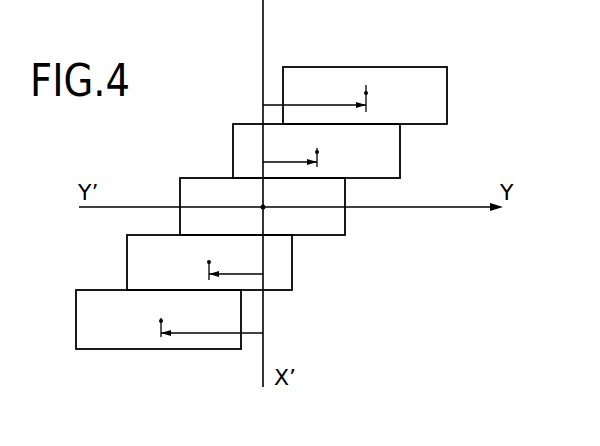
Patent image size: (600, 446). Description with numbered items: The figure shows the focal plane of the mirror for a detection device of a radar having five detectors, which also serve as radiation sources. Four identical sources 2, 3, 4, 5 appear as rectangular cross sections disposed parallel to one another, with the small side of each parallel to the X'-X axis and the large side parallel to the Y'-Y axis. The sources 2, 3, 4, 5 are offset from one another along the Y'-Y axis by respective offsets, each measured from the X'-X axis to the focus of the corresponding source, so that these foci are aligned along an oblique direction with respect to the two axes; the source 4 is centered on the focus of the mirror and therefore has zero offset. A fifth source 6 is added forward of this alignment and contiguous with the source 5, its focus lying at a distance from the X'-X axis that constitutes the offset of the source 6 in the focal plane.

The source 2 is at (423, 86).
The source 3 is at (387, 143).
The source 4 is at (313, 222).
The source 5 is at (281, 284).
The fifth source 6 is at (141, 337).